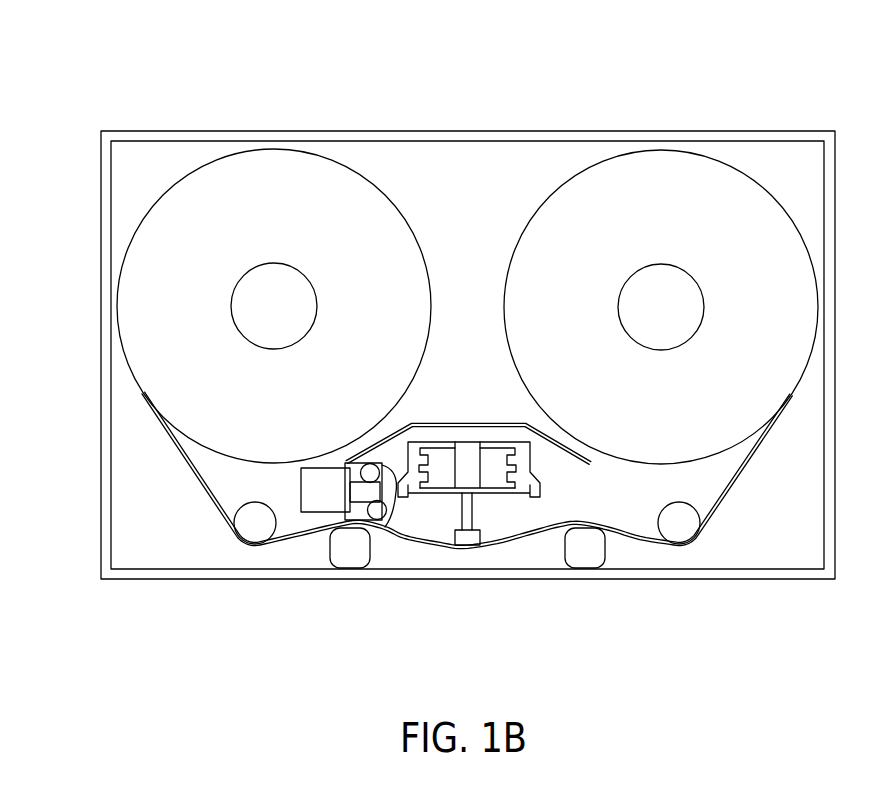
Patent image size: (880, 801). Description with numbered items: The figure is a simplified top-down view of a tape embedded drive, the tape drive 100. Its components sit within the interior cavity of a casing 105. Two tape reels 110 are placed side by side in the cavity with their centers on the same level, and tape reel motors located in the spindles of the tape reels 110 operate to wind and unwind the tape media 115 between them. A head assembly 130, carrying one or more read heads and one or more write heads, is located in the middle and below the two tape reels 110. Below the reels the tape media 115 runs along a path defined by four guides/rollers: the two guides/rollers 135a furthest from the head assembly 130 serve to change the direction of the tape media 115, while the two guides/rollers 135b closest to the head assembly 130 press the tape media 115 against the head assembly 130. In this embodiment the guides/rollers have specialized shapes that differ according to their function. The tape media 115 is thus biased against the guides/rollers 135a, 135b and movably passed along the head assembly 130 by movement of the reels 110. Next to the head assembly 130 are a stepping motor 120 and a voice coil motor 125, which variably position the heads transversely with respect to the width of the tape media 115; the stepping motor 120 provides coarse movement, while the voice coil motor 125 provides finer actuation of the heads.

The tape drive 100 is at (100, 66).
The casing 105 is at (500, 130).
The tape reel 110 is at (258, 150).
The tape media 115 is at (202, 488).
The stepping motor 120 is at (310, 513).
The voice coil motor 125 is at (442, 493).
The head assembly 130 is at (467, 545).
The guides/rollers 135a is at (255, 527).
The guides/rollers 135b is at (352, 553).